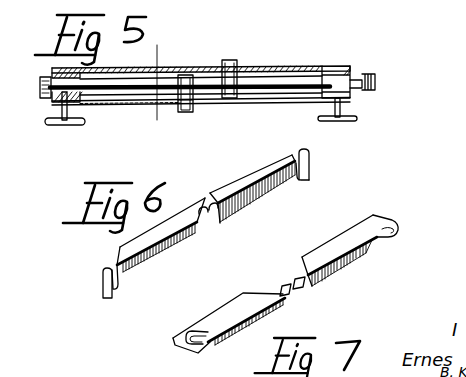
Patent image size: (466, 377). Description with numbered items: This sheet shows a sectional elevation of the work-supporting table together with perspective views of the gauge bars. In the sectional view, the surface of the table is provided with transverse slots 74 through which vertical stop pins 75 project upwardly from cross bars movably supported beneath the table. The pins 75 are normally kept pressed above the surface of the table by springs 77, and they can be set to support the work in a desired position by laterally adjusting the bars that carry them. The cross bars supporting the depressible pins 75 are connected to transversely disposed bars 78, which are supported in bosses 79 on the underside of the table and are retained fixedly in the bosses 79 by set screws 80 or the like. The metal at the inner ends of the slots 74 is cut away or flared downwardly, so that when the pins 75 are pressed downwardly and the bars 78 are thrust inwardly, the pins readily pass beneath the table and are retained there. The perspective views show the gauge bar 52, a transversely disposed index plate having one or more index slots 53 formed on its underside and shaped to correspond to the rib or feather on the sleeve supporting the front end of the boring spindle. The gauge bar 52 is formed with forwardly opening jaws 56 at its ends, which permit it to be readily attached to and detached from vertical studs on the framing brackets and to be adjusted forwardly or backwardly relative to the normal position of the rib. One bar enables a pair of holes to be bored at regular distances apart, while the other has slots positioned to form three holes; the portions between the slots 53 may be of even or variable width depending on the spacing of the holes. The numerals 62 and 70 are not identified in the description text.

In FIG. 5, the gauge assembly 62 is at (318, 58).
In FIG. 5, the base bar 70 is at (105, 104).
In FIG. 5, the transverse slots 74 is at (173, 68).
In FIG. 5, the vertical stop pins 75 is at (228, 62).
In FIG. 5, the springs 77 is at (178, 112).
In FIG. 5, the transversely disposed bars 78 is at (133, 104).
In FIG. 5, the bosses 79 is at (50, 99).
In FIG. 5, the set screws 80 is at (56, 124).
In FIG. 6, the gauge bar 52 is at (258, 200).
In FIG. 7, the gauge bar 52 is at (327, 244).
In FIG. 6, the index slots 53 is at (297, 284).
In FIG. 7, the index slots 53 is at (296, 286).
In FIG. 6, the forwardly opening jaws 56 is at (104, 272).
In FIG. 7, the forwardly opening jaws 56 is at (202, 348).